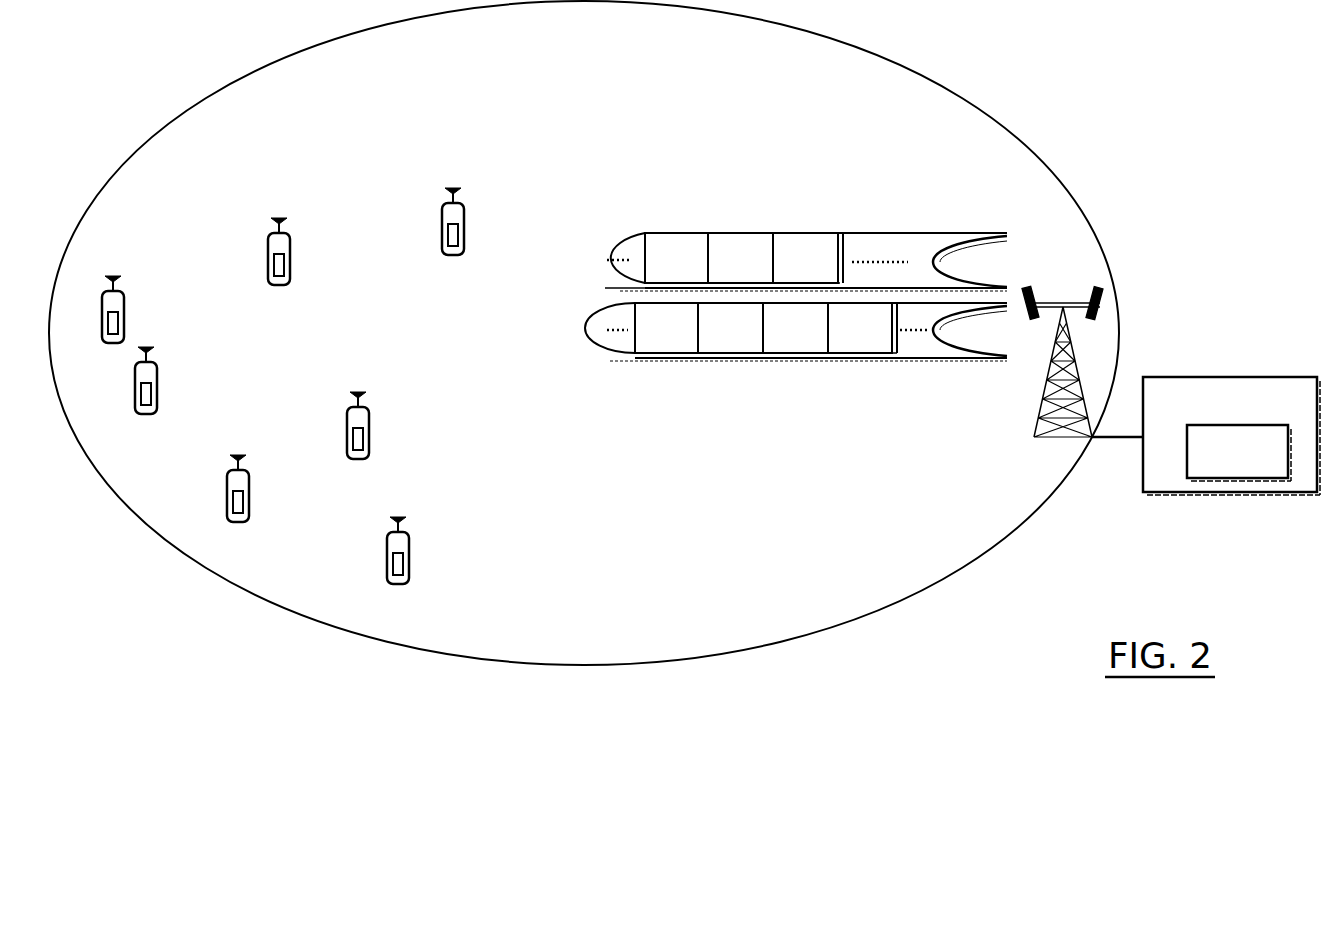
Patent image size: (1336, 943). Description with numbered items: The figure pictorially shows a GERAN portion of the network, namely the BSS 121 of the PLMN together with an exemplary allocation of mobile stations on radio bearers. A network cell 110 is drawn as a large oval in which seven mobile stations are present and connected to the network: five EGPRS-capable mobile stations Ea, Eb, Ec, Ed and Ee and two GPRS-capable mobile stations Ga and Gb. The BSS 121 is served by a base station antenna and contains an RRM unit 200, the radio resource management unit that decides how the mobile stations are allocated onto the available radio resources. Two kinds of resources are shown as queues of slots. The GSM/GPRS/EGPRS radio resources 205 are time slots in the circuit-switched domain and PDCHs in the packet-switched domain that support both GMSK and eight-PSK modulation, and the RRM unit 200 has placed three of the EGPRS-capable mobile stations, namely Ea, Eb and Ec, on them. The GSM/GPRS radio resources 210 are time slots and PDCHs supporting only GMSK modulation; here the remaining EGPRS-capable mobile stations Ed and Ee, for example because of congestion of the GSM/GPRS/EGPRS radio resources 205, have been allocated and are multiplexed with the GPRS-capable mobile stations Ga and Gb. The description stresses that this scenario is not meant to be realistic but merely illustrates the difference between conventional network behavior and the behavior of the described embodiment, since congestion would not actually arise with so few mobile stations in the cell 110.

The network cell 110 is at (480, 653).
The GSM/GPRS/EGPRS radio resources 205 is at (770, 238).
The GSM/GPRS radio resources 210 is at (697, 355).
The BSS 121 is at (1170, 477).
The RRM unit 200 is at (1248, 477).
The EGPRS-capable mobile station Ea is at (124, 298).
The EGPRS-capable mobile station Eb is at (465, 205).
The EGPRS-capable mobile station Ec is at (410, 532).
The EGPRS-capable mobile station Ed is at (370, 408).
The EGPRS-capable mobile station Ee is at (157, 363).
The GPRS-capable mobile station Ga is at (292, 234).
The GPRS-capable mobile station Gb is at (252, 470).